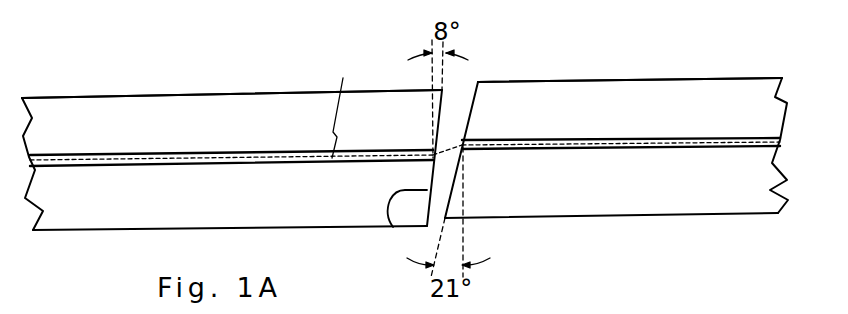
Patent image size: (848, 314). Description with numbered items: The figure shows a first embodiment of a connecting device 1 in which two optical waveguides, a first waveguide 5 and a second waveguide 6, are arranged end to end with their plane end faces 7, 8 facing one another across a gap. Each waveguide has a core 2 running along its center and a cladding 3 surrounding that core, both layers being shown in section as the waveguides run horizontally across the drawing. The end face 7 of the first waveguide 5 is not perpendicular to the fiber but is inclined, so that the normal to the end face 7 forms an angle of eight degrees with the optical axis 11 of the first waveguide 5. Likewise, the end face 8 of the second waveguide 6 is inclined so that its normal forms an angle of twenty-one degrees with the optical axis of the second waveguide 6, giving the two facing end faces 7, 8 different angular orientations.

The connecting device 1 is at (297, 53).
The core 2 is at (68, 157).
The cladding 3 is at (108, 115).
The first waveguide 5 is at (152, 97).
The second waveguide 6 is at (623, 80).
The end face 7 is at (393, 227).
The end face 8 is at (478, 118).
The optical axis 11 is at (350, 100).